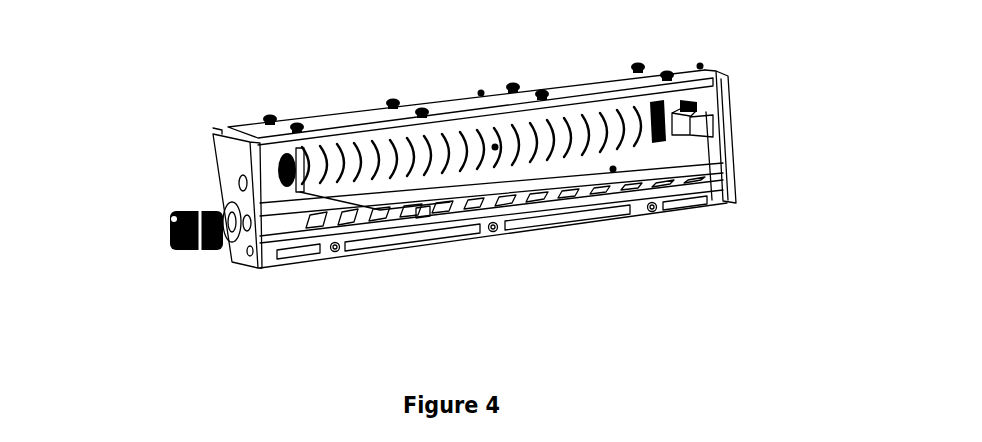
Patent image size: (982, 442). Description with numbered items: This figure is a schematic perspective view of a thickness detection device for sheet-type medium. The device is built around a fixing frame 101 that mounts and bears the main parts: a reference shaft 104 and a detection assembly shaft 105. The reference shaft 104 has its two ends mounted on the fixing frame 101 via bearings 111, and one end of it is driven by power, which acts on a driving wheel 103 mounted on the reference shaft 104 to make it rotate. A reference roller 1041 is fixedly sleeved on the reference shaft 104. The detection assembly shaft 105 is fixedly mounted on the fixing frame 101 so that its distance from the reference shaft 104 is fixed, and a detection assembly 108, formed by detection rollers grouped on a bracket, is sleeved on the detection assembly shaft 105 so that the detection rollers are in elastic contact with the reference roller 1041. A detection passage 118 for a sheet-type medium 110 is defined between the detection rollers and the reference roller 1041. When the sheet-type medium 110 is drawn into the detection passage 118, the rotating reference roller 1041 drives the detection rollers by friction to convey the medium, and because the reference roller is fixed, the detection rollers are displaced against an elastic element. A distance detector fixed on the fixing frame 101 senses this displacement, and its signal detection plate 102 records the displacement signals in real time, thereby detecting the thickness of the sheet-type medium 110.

The fixing frame 101 is at (700, 66).
The signal detection plate 102 is at (481, 93).
The driving wheel 103 is at (172, 243).
The reference shaft 104 is at (222, 212).
The detection assembly shaft 105 is at (687, 100).
The detection assembly 108 is at (495, 147).
The sheet-type medium 110 is at (613, 169).
The bearings 111 is at (720, 203).
The detection passage 118 is at (299, 145).
The reference roller 1041 is at (423, 213).